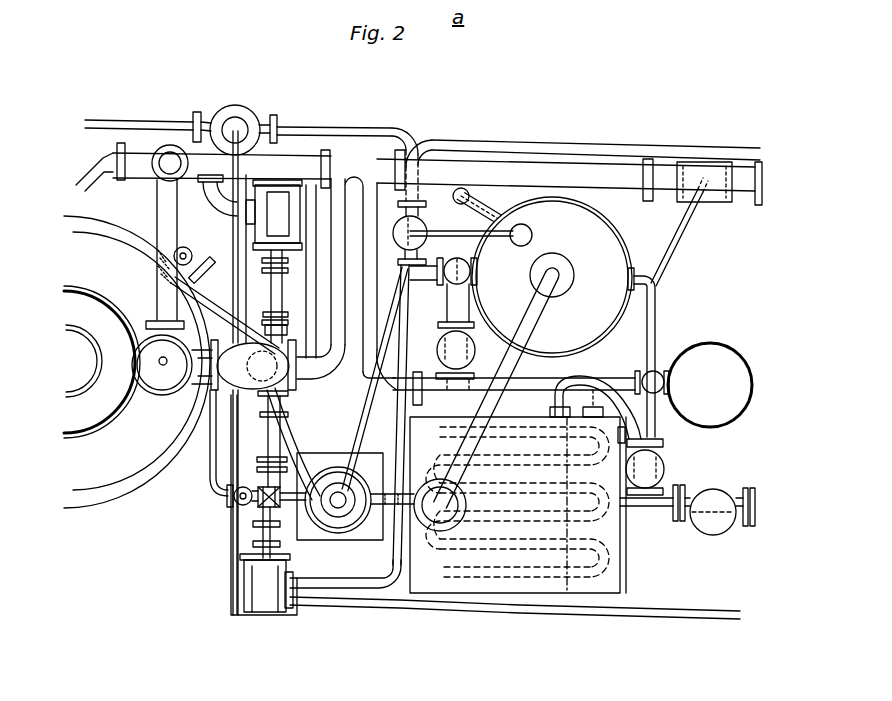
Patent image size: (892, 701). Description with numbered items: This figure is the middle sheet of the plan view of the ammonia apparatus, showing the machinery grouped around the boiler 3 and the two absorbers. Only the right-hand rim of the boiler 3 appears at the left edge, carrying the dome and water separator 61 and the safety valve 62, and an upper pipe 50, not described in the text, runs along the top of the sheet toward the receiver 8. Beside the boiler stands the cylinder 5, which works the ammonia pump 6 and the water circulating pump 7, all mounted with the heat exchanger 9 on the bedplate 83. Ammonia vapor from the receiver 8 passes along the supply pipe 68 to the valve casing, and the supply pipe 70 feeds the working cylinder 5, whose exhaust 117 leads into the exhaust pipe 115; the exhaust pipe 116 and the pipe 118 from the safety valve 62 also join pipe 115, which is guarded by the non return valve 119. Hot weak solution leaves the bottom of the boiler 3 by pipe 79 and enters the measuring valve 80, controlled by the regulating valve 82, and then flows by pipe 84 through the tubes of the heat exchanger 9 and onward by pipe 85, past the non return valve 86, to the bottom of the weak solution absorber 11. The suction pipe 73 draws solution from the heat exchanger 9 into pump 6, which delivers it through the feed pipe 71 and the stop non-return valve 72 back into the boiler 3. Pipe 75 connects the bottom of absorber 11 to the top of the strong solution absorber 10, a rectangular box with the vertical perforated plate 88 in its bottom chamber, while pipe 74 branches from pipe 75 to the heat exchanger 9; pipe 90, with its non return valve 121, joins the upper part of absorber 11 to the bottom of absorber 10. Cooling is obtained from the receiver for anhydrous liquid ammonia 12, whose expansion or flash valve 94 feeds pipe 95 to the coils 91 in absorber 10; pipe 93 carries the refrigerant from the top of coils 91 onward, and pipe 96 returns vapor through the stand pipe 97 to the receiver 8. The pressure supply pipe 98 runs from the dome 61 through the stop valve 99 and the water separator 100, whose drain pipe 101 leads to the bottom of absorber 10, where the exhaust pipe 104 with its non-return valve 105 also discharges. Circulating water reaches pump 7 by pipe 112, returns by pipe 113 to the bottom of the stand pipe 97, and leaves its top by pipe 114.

The boiler 3 is at (119, 492).
The cylinder 5 is at (274, 259).
The ammonia pump 6 is at (250, 393).
The water circulating pump 7 is at (264, 505).
The receiver for ammonia vapor 8 is at (250, 112).
The heat exchanger 9 is at (356, 526).
The absorber for strong solution of ammonia 10 is at (620, 571).
The absorber for weak solution of ammonia 11 is at (553, 277).
The receiver for anhydrous liquid ammonia 12 is at (710, 385).
The pipe 50 is at (148, 122).
The dome and water separator 61 is at (170, 393).
The safety valve 62 is at (162, 365).
The supply pipe 68 is at (208, 260).
The supply pipe 70 is at (306, 293).
The feed or delivery pipe 71 is at (200, 292).
The stop non-return valve 72 is at (191, 244).
The supply or suction pipe 73 is at (296, 446).
The pipe 74 is at (428, 512).
The pipe 75 is at (538, 325).
The pipe 79 is at (210, 463).
The measuring valve 80 is at (258, 508).
The regulating valve 82 is at (228, 504).
The bedplate 83 is at (268, 431).
The pipe 84 is at (309, 504).
The pipe 85 is at (352, 449).
The non return valve 86 is at (447, 281).
The vertical perforated plate 88 is at (566, 572).
The pipe 90 is at (491, 206).
The coils 91 is at (517, 502).
The pipe 93 is at (657, 318).
The expansion or flash valve 94 is at (650, 371).
The pipe 95 is at (571, 381).
The pipe 96 is at (328, 130).
The stand pipe 97 is at (396, 234).
The pressure supply pipe 98 is at (340, 276).
The stop valve 99 is at (256, 365).
The water separator 100 is at (712, 203).
The drain pipe 101 is at (669, 272).
The pipe 104 is at (652, 505).
The non-return valve 105 is at (720, 511).
The pipe 112 is at (690, 619).
The pipe 113 is at (350, 569).
The pipe 114 is at (552, 142).
The exhaust pipe 115 is at (359, 276).
The exhaust pipe 116 is at (101, 180).
The exhaust 117 is at (214, 198).
The pipe 118 is at (156, 206).
The non return valve 119 is at (664, 467).
The non return valve 121 is at (457, 350).